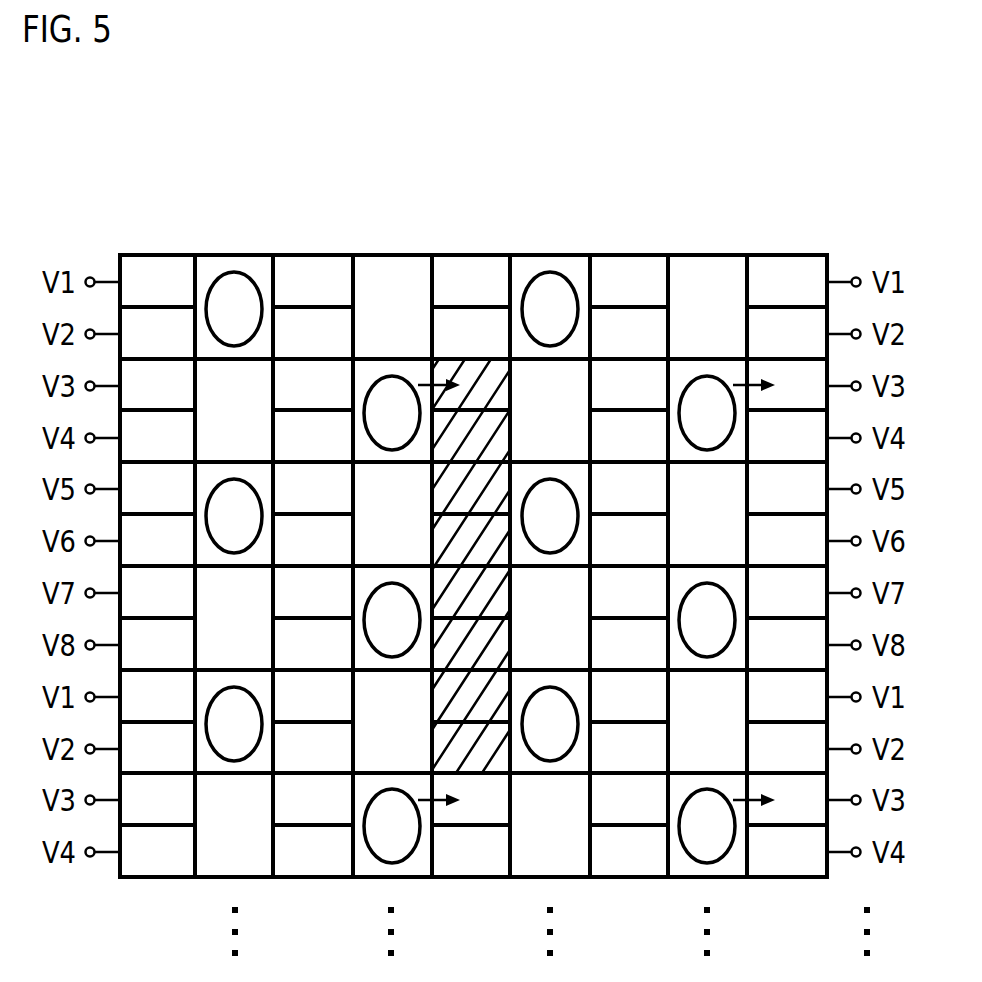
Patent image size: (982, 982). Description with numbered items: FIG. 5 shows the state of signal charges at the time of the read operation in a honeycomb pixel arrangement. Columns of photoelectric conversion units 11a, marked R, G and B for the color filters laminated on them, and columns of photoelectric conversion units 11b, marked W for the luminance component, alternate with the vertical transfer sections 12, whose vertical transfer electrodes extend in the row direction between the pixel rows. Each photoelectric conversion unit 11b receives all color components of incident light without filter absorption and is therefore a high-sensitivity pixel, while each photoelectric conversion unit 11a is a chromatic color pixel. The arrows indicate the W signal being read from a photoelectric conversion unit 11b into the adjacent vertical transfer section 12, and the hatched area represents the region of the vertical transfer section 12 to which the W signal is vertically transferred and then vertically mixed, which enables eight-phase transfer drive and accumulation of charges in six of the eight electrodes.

The vertical transfer section 12 is at (473, 516).
The photoelectric conversion unit for extracting color components 11a is at (398, 458).
The photoelectric conversion unit for extracting a luminance component 11b is at (569, 509).